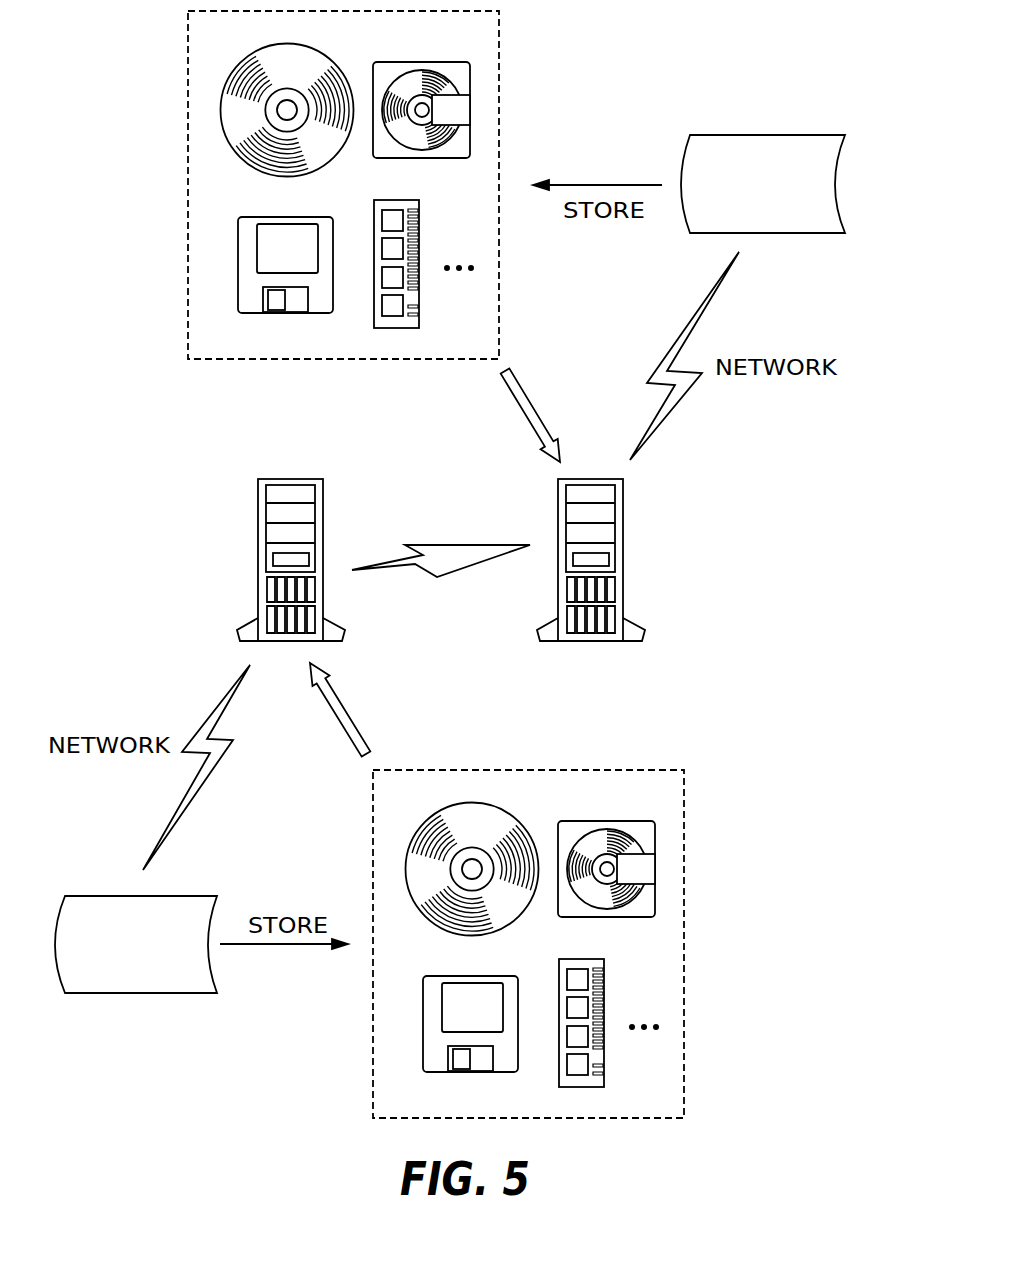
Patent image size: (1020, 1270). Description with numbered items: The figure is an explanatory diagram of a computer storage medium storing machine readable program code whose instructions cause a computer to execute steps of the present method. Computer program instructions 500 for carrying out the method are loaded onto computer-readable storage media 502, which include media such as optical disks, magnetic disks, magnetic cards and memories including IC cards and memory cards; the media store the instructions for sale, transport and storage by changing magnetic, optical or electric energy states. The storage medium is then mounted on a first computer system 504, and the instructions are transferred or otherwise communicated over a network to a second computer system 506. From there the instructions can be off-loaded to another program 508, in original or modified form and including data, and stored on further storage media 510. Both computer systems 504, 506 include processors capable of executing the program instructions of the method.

The computer program instructions 500 is at (168, 896).
The computer-readable storage media 502 is at (685, 837).
The computer system 504 is at (292, 479).
The computer system 506 is at (623, 560).
The program 508 is at (769, 135).
The storage media 510 is at (499, 87).